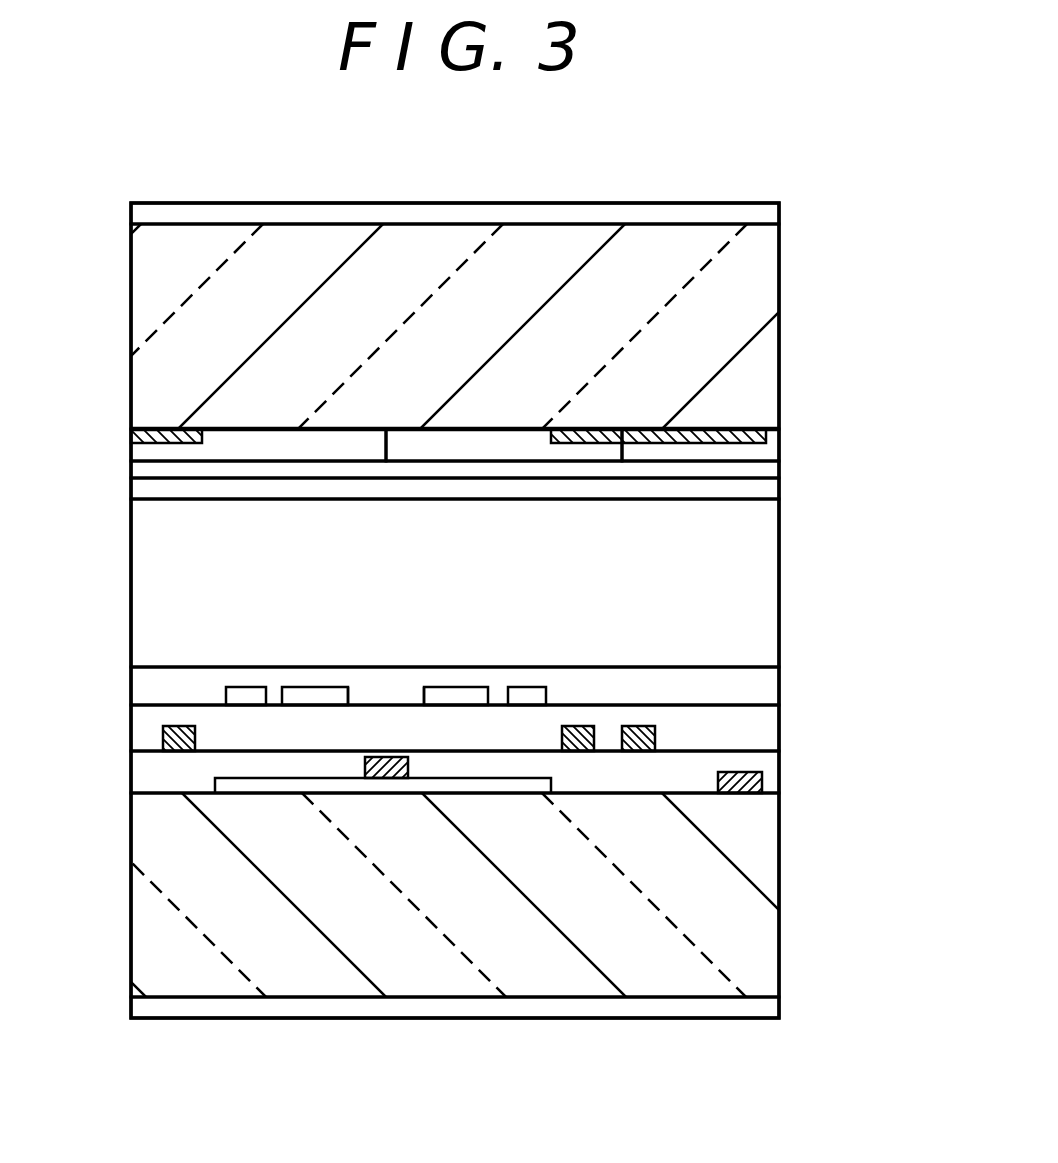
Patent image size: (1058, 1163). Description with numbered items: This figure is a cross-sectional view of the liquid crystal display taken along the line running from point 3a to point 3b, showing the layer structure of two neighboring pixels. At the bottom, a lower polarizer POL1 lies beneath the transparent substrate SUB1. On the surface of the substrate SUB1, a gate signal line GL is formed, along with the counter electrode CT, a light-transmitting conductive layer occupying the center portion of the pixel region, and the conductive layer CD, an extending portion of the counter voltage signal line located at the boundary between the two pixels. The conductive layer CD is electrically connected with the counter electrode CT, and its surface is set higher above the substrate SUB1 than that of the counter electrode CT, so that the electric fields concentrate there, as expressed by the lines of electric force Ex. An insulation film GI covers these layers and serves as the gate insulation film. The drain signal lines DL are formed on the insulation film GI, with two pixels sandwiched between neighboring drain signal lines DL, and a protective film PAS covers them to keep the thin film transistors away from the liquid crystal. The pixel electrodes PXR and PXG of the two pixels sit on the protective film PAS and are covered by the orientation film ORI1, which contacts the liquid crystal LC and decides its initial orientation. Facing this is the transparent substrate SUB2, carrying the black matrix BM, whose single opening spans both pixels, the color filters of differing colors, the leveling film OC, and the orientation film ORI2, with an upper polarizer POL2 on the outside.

The upper polarizer POL2 is at (770, 215).
The transparent substrate SUB2 is at (765, 275).
The black matrix BM is at (742, 425).
The leveling film OC is at (760, 472).
The orientation film ORI2 is at (747, 490).
The liquid crystal LC is at (758, 580).
The section line end 3a is at (91, 614).
The section line end 3b is at (889, 614).
The orientation film ORI1 is at (763, 683).
The pixel electrode PXR is at (297, 693).
The pixel electrode PXG is at (522, 695).
The lines of electric force Ex is at (379, 736).
The protective film PAS is at (768, 727).
The drain signal line DL is at (163, 733).
The insulation film GI is at (763, 762).
The counter electrode CT is at (333, 780).
The conductive layer CD is at (390, 779).
The gate signal line GL is at (747, 795).
The transparent substrate SUB1 is at (755, 930).
The lower polarizer POL1 is at (765, 1008).